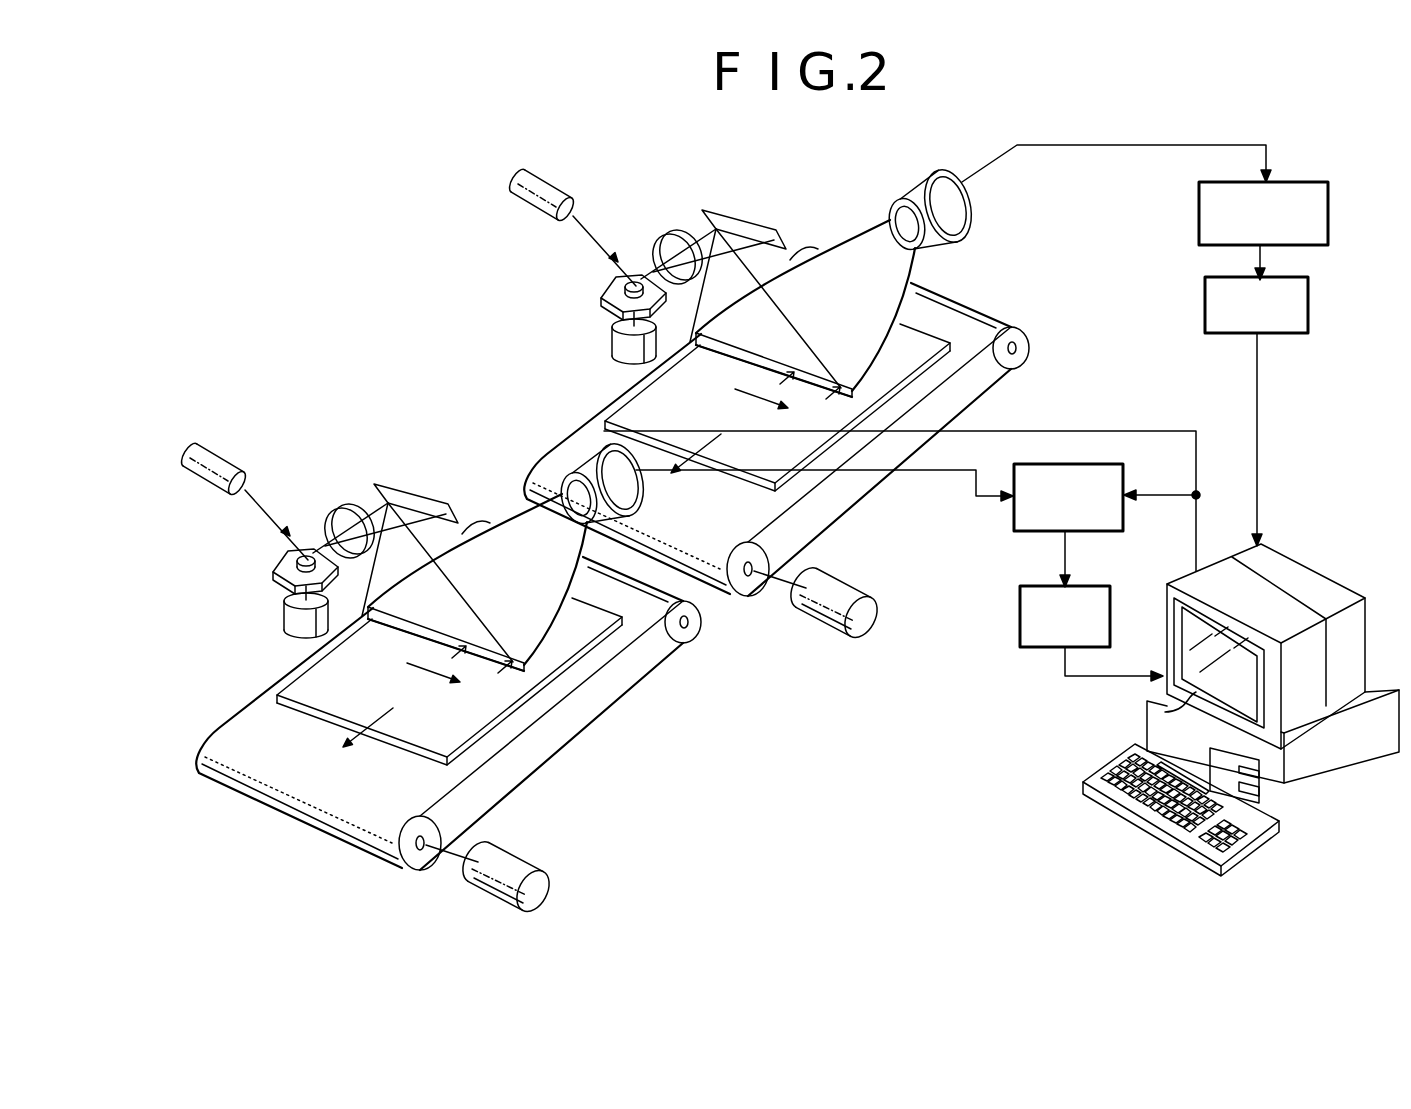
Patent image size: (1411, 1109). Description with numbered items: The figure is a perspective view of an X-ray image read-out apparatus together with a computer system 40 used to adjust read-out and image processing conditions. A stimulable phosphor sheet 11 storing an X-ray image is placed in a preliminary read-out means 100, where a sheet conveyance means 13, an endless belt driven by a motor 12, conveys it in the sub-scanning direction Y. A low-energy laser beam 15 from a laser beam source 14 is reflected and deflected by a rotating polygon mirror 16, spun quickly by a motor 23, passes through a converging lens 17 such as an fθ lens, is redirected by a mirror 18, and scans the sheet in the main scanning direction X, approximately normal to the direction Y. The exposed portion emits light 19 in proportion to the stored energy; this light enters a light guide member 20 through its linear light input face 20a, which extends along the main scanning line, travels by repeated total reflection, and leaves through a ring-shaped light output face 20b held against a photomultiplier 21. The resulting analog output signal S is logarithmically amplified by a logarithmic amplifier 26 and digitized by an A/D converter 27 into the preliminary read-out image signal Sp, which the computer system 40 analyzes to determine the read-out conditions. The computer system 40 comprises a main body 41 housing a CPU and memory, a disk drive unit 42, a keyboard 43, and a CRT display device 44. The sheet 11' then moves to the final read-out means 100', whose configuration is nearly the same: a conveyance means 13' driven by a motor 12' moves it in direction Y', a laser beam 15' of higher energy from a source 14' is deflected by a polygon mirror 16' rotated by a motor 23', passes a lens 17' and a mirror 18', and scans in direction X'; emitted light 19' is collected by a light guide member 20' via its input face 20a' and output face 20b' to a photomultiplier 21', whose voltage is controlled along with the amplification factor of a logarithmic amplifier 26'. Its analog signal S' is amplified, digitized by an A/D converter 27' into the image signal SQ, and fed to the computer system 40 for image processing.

The preliminary read-out means 100 is at (710, 163).
The final read-out means 100' is at (373, 398).
The stimulable phosphor sheet 11 is at (777, 420).
The stimulable phosphor sheet 11' is at (450, 686).
The motor 12 is at (838, 594).
The motor 12' is at (515, 869).
The sheet conveyance means 13 is at (776, 439).
The sheet conveyance means 13' is at (448, 713).
The laser beam source 14 is at (557, 186).
The laser beam source 14' is at (217, 448).
The laser beam 15 is at (707, 285).
The laser beam 15' is at (379, 553).
The rotating polygon mirror 16 is at (606, 299).
The rotating polygon mirror 16' is at (279, 572).
The converging lens 17 is at (677, 241).
The converging lens 17' is at (349, 505).
The mirror 18 is at (750, 211).
The mirror 18' is at (420, 479).
The emitted light 19 is at (761, 373).
The emitted light 19' is at (427, 651).
The light guide member 20 is at (805, 282).
The light guide member 20' is at (477, 549).
The light input face 20a is at (921, 435).
The light input face 20a' is at (605, 703).
The light output face 20b is at (954, 236).
The light output face 20b' is at (639, 502).
The photomultiplier 21 is at (939, 189).
The photomultiplier 21' is at (599, 449).
The motor 23 is at (601, 341).
The motor 23' is at (274, 615).
The logarithmic amplifier 26 is at (1290, 213).
The logarithmic amplifier 26' is at (1097, 493).
The A/D converter 27 is at (1289, 300).
The A/D converter 27' is at (1092, 592).
The computer system 40 is at (1347, 570).
The main body 41 is at (1381, 695).
The disk drive unit 42 is at (1262, 792).
The keyboard 43 is at (1255, 821).
The CRT display device 44 is at (1165, 712).
The analog output signal S is at (1116, 144).
The analog output signal S' is at (824, 496).
The preliminary read-out image signal Sp is at (1257, 392).
The image signal SQ is at (1063, 670).
The main scanning direction X is at (759, 406).
The main scanning direction X' is at (433, 684).
The sub-scanning direction Y is at (689, 468).
The sub-scanning direction Y' is at (357, 743).